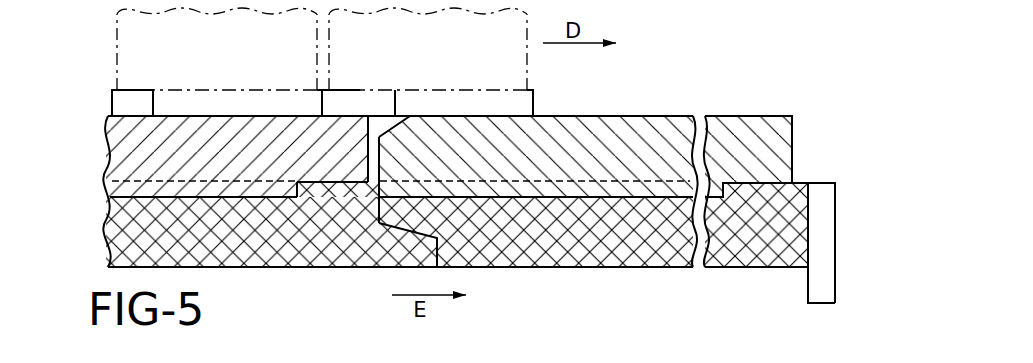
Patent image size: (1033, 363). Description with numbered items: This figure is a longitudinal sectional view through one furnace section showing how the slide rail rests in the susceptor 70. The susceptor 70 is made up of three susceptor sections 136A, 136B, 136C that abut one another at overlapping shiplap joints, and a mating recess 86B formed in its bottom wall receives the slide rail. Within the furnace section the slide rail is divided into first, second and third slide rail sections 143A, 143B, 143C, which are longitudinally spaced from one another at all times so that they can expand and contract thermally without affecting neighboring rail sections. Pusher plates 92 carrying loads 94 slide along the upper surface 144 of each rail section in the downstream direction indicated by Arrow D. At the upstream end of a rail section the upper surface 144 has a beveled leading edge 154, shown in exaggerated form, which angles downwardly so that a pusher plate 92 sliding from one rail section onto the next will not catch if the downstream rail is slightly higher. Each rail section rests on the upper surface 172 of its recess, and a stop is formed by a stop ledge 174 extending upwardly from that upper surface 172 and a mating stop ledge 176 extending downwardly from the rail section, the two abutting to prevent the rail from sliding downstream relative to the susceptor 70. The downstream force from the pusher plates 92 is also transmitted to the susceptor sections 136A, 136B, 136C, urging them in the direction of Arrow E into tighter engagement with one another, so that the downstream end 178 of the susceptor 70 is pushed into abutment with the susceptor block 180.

The load 94 is at (114, 33).
The pusher plate 92 is at (111, 100).
The first slide rail section 143A is at (135, 114).
The upper surface 144 is at (152, 115).
The second slide rail section 143B is at (664, 114).
The third slide rail section 143C is at (768, 114).
The beveled leading edge 154 is at (390, 130).
The upper surface of recess 172 is at (217, 196).
The stop ledge 174 is at (281, 181).
The stop ledge 176 is at (293, 184).
The mating recess 86B is at (138, 196).
The susceptor 70 is at (112, 239).
The first susceptor section 136A is at (344, 269).
The second susceptor section 136B is at (611, 269).
The third susceptor section 136C is at (746, 269).
The downstream end of susceptor 178 is at (811, 192).
The susceptor block 180 is at (822, 296).